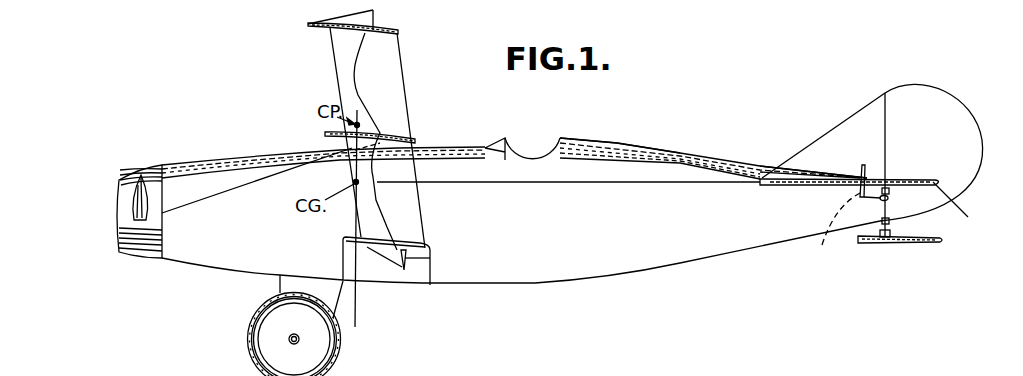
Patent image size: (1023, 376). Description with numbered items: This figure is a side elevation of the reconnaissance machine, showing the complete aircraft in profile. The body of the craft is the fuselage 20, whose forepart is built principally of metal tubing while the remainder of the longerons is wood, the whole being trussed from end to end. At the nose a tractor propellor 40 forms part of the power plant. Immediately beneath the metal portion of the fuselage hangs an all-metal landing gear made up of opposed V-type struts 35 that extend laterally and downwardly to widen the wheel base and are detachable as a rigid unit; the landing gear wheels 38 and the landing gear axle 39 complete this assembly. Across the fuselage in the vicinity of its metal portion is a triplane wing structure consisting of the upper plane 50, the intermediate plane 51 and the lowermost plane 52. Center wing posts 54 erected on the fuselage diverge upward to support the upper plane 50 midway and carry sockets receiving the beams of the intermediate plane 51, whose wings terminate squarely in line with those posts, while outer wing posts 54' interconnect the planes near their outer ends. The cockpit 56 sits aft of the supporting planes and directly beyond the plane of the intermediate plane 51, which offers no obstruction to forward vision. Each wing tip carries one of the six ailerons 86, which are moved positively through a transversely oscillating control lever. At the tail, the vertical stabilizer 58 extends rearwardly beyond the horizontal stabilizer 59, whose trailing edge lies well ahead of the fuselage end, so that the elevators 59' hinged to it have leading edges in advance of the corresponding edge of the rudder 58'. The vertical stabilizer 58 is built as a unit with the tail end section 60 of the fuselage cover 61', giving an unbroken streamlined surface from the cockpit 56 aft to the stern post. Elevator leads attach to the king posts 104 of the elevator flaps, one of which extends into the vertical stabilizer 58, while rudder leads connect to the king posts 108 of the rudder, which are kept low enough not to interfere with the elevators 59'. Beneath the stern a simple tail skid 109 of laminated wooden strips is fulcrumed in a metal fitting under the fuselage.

The fuselage 20 is at (535, 283).
The V-type struts 35 is at (342, 297).
The landing gear wheels 38 is at (334, 345).
The landing gear axle 39 is at (291, 338).
The tractor propellor 40 is at (128, 200).
The upper plane 50 is at (310, 27).
The intermediate plane 51 is at (325, 133).
The lowermost plane 52 is at (343, 250).
The center wing posts 54 is at (401, 141).
The outer wing posts 54' is at (328, 132).
The cockpit 56 is at (513, 163).
The vertical stabilizer 58 is at (823, 162).
The rudder 58' is at (939, 140).
The horizontal stabilizer 59 is at (849, 200).
The elevators 59' is at (972, 211).
The tail end section 60 is at (768, 170).
The fuselage cover 61' is at (620, 142).
The ailerons 86 is at (428, 246).
The king posts of the elevator flaps 104 is at (833, 231).
The king posts of the rudder 108 is at (880, 210).
The tail skid 109 is at (917, 245).